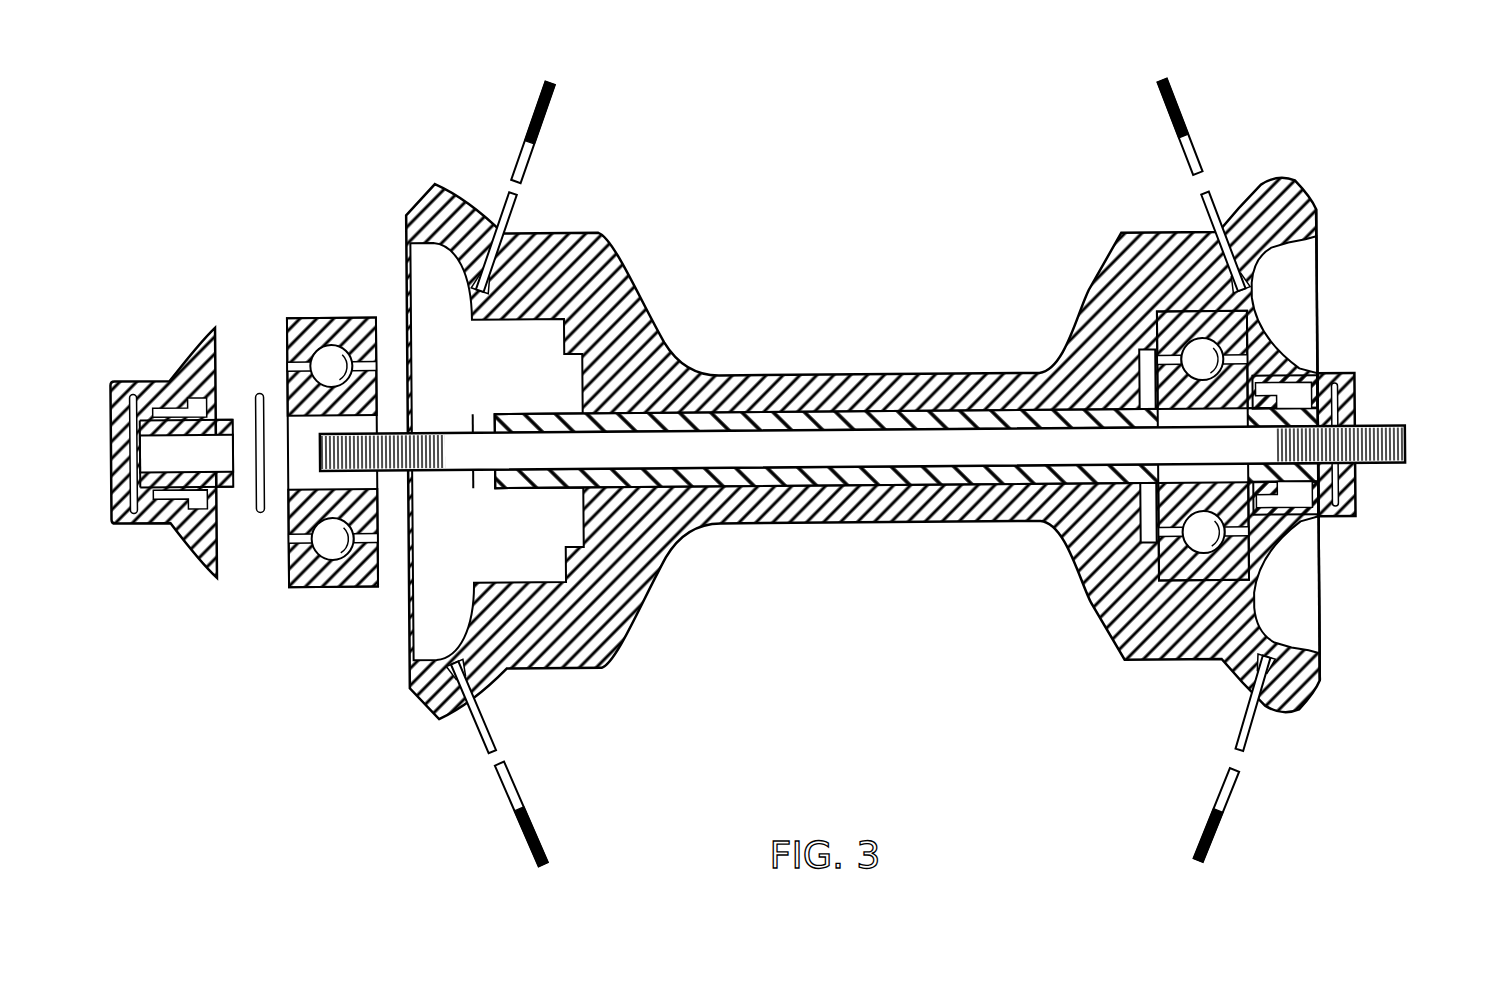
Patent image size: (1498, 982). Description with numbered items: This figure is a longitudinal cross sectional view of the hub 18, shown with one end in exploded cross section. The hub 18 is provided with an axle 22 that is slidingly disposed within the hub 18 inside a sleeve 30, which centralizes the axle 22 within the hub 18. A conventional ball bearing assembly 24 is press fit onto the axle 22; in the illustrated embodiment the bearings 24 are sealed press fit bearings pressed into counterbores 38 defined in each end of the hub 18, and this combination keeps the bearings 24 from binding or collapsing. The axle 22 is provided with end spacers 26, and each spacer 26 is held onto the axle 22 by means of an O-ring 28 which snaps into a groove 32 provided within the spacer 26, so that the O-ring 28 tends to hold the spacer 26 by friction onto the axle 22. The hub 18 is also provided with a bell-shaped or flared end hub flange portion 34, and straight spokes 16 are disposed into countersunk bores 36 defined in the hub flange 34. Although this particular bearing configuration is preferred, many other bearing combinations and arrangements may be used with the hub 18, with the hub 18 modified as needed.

The straight spokes 16 is at (1194, 180).
The hub 18 is at (800, 472).
The axle 22 is at (1396, 432).
The ball bearing assembly 24 is at (342, 578).
The end spacer 26 is at (195, 345).
The O-ring 28 is at (259, 392).
The sleeve 30 is at (825, 389).
The groove 32 is at (136, 513).
The hub flange portion 34 is at (1340, 185).
The countersunk bores 36 is at (1222, 224).
The counterbores 38 is at (1186, 585).